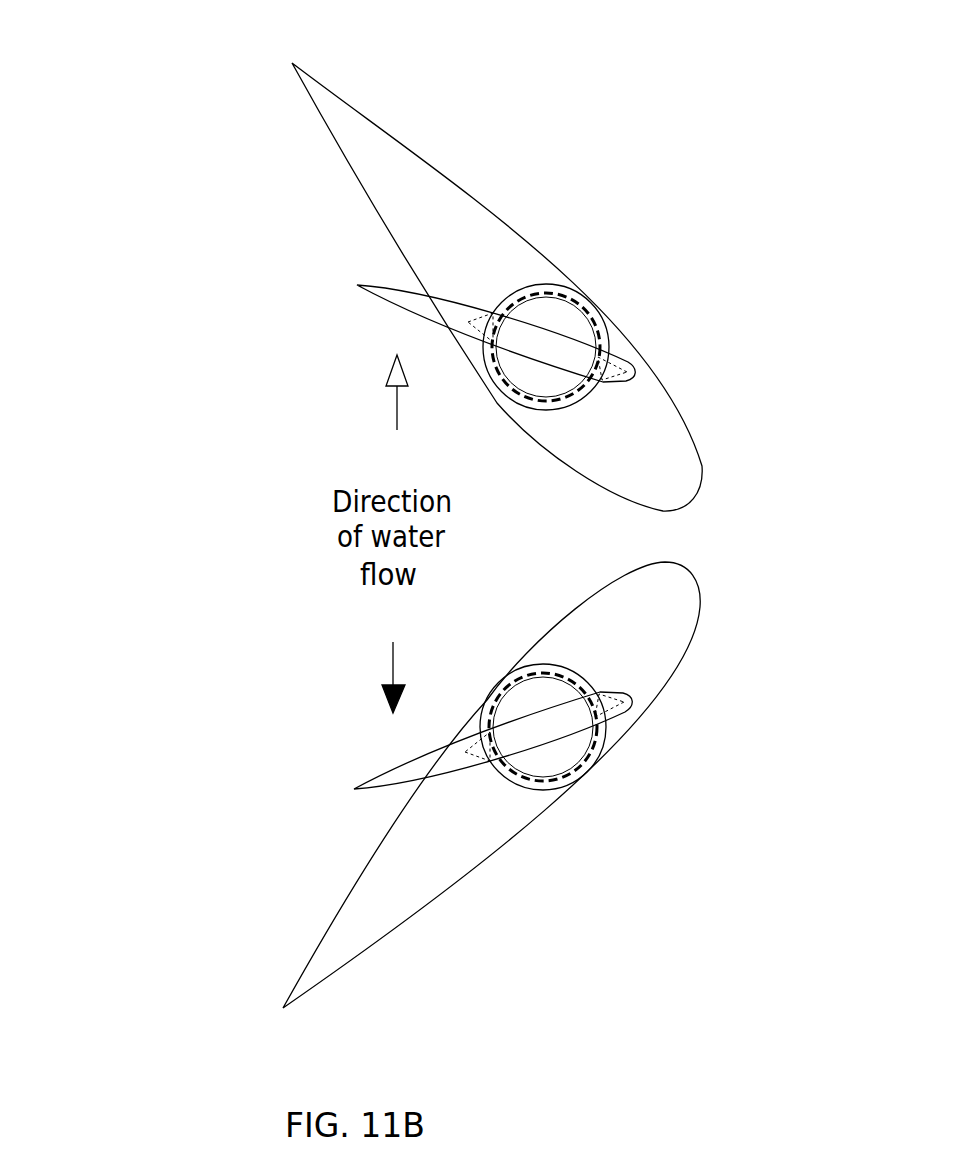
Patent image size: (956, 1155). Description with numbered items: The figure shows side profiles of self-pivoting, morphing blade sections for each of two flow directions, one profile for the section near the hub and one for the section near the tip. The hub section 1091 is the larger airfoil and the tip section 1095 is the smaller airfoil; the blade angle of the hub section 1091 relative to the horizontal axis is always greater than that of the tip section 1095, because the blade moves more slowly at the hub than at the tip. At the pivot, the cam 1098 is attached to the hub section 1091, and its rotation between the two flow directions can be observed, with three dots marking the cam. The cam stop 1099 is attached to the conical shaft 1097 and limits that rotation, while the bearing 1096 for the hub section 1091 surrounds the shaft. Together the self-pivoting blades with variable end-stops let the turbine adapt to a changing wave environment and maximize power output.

The hub section 1091 is at (347, 128).
The tip section 1095 is at (423, 308).
The bearing 1096 is at (603, 306).
The conical shaft 1097 is at (558, 315).
The cam 1098 is at (575, 410).
The cam stop 1099 is at (528, 292).